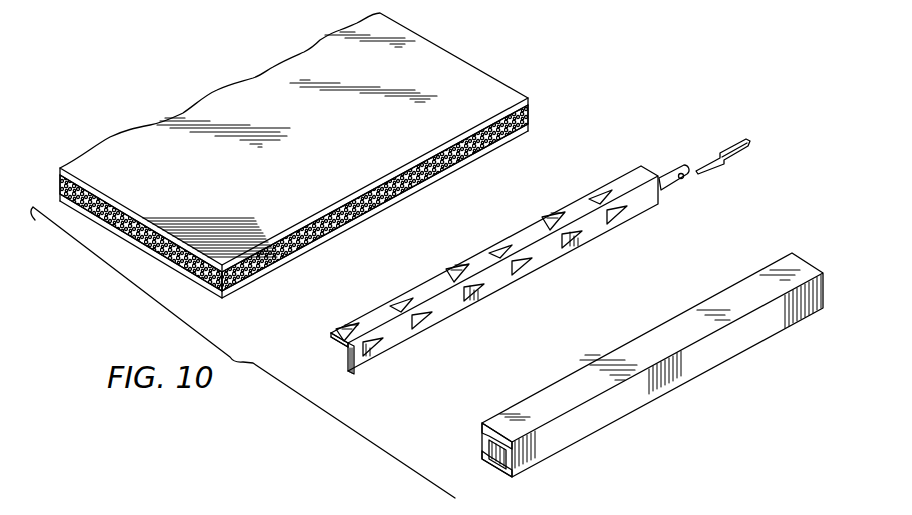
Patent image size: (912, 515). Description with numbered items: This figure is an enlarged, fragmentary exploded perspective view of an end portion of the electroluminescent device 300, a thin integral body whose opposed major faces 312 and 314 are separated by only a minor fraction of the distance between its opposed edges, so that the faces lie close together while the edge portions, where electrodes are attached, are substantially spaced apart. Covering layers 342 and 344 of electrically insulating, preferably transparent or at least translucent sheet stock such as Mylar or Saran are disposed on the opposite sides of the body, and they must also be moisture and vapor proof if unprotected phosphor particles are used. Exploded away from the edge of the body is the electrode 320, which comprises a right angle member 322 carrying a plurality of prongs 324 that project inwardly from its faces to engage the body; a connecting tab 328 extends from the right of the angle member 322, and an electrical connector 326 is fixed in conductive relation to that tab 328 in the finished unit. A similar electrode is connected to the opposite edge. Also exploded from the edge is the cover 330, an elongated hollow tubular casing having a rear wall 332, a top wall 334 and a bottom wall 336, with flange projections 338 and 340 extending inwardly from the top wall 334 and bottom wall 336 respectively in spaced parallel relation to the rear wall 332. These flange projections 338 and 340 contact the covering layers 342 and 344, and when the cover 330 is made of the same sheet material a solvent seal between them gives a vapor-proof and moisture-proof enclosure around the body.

The electroluminescent device 300 is at (466, 49).
The major face 312 is at (261, 92).
The covering layer 342 is at (87, 182).
The covering layer 344 is at (125, 233).
The major face 314 is at (150, 258).
The electrode 320 is at (394, 364).
The right angle member 322 is at (334, 339).
The prongs 324 is at (461, 300).
The electrical connector 326 is at (726, 146).
The connecting tab 328 is at (672, 190).
The cover 330 is at (748, 356).
The rear wall 332 is at (607, 413).
The top wall 334 is at (662, 333).
The bottom wall 336 is at (490, 466).
The flange projection 338 is at (488, 435).
The flange projection 340 is at (485, 450).